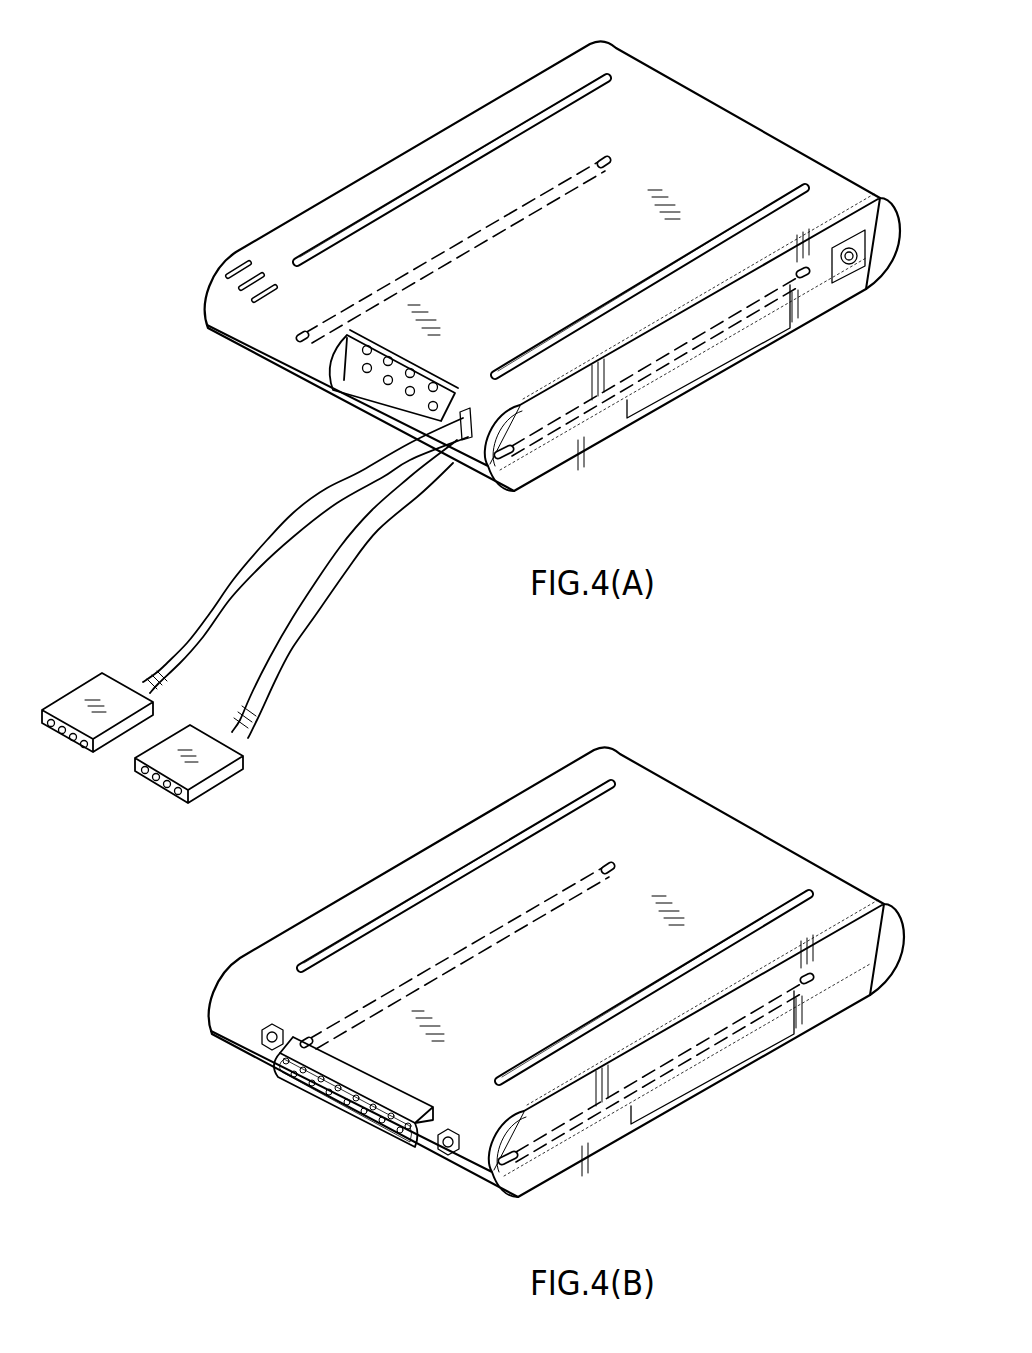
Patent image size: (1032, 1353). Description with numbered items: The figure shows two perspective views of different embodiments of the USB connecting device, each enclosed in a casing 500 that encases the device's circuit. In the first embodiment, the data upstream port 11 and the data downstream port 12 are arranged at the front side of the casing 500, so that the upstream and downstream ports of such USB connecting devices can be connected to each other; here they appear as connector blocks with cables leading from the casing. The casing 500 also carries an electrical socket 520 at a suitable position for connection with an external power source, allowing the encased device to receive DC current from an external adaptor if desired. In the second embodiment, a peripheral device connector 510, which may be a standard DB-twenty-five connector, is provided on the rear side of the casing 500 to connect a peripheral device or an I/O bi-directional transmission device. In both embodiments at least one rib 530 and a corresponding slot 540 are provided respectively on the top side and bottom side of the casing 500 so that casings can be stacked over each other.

In FIG. 4A, the casing 500 is at (657, 90).
In FIG. 4A, the slot 540 is at (939, 134).
In FIG. 4B, the slot 540 is at (567, 894).
In FIG. 4A, the rib 530 is at (680, 352).
In FIG. 4B, the rib 530 is at (559, 953).
In FIG. 4A, the electrical socket 520 is at (849, 265).
In FIG. 4B, the peripheral device connector 510 is at (360, 1131).
In FIG. 4A, the data upstream port 11 is at (383, 380).
In FIG. 4A, the data downstream port 12 is at (207, 767).